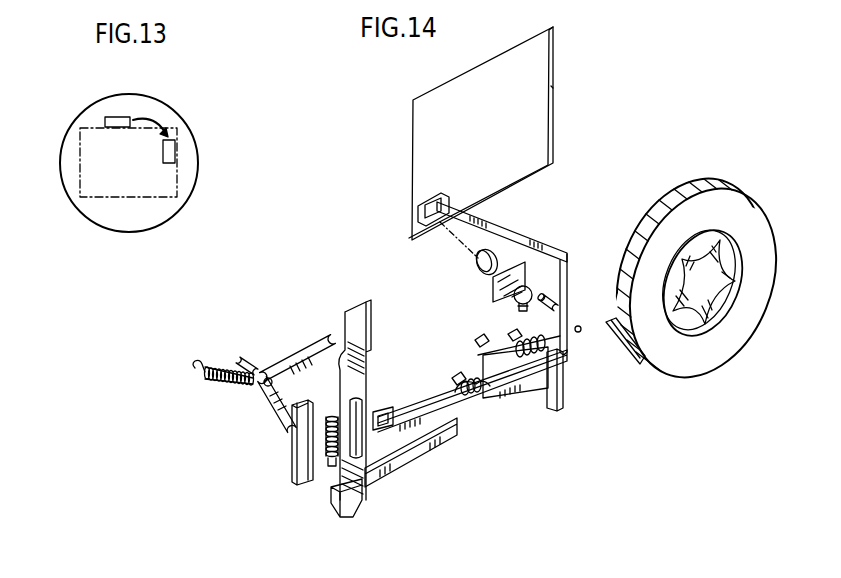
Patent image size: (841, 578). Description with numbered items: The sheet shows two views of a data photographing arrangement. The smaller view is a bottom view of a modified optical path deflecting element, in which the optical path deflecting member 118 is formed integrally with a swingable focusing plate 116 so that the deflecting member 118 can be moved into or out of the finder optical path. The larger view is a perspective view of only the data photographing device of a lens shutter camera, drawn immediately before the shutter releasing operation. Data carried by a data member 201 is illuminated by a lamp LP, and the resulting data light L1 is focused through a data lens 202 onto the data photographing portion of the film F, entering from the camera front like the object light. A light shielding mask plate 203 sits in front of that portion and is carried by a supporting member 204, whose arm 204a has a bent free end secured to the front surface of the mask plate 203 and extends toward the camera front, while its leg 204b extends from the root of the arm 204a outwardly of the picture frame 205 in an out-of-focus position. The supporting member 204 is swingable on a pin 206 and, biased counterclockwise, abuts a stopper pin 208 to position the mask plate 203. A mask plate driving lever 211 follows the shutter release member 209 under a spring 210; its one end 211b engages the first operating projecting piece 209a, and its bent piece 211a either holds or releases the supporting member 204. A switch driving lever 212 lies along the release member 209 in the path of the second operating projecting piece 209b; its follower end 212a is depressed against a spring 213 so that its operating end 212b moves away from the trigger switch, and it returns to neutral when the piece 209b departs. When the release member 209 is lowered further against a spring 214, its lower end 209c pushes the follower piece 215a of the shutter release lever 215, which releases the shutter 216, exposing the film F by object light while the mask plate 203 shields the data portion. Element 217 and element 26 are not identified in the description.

In FIG. 13, the focusing plate 116 is at (82, 219).
In FIG. 13, the optical path deflecting member 118 is at (110, 117).
In FIG. 14, the film F is at (452, 95).
In FIG. 14, the picture frame 205 is at (551, 86).
In FIG. 14, the light shielding mask plate 203 is at (437, 193).
In FIG. 14, the supporting member 204 is at (528, 265).
In FIG. 14, the arm 204a is at (488, 220).
In FIG. 14, the leg 204b is at (561, 278).
In FIG. 14, the data light L1 is at (449, 240).
In FIG. 14, the data lens 202 is at (478, 268).
In FIG. 14, the data member 201 is at (493, 293).
In FIG. 14, the lamp LP is at (506, 309).
In FIG. 14, the stopper pin 208 is at (555, 301).
In FIG. 14, the pin 217 is at (580, 331).
In FIG. 14, the spring 210 is at (480, 353).
In FIG. 14, the pin 206 is at (527, 378).
In FIG. 14, the mask plate driving lever 211 is at (493, 374).
In FIG. 14, the bent piece 211a is at (565, 365).
In FIG. 14, the end 211b is at (377, 403).
In FIG. 14, the shutter release lever 215 is at (448, 435).
In FIG. 14, the follower piece 215a is at (357, 513).
In FIG. 14, the shutter 216 is at (727, 267).
In FIG. 14, the shutter release member 209 is at (367, 394).
In FIG. 14, the first operating projecting piece 209a is at (382, 440).
In FIG. 14, the second operating projecting piece 209b is at (287, 363).
In FIG. 14, the lower end 209c is at (362, 497).
In FIG. 14, the switch driving lever 212 is at (272, 368).
In FIG. 14, the follower end 212a is at (335, 340).
In FIG. 14, the operating end 212b is at (292, 433).
In FIG. 14, the spring 213 is at (217, 380).
In FIG. 14, the channel member 26 is at (290, 477).
In FIG. 14, the spring 214 is at (327, 466).